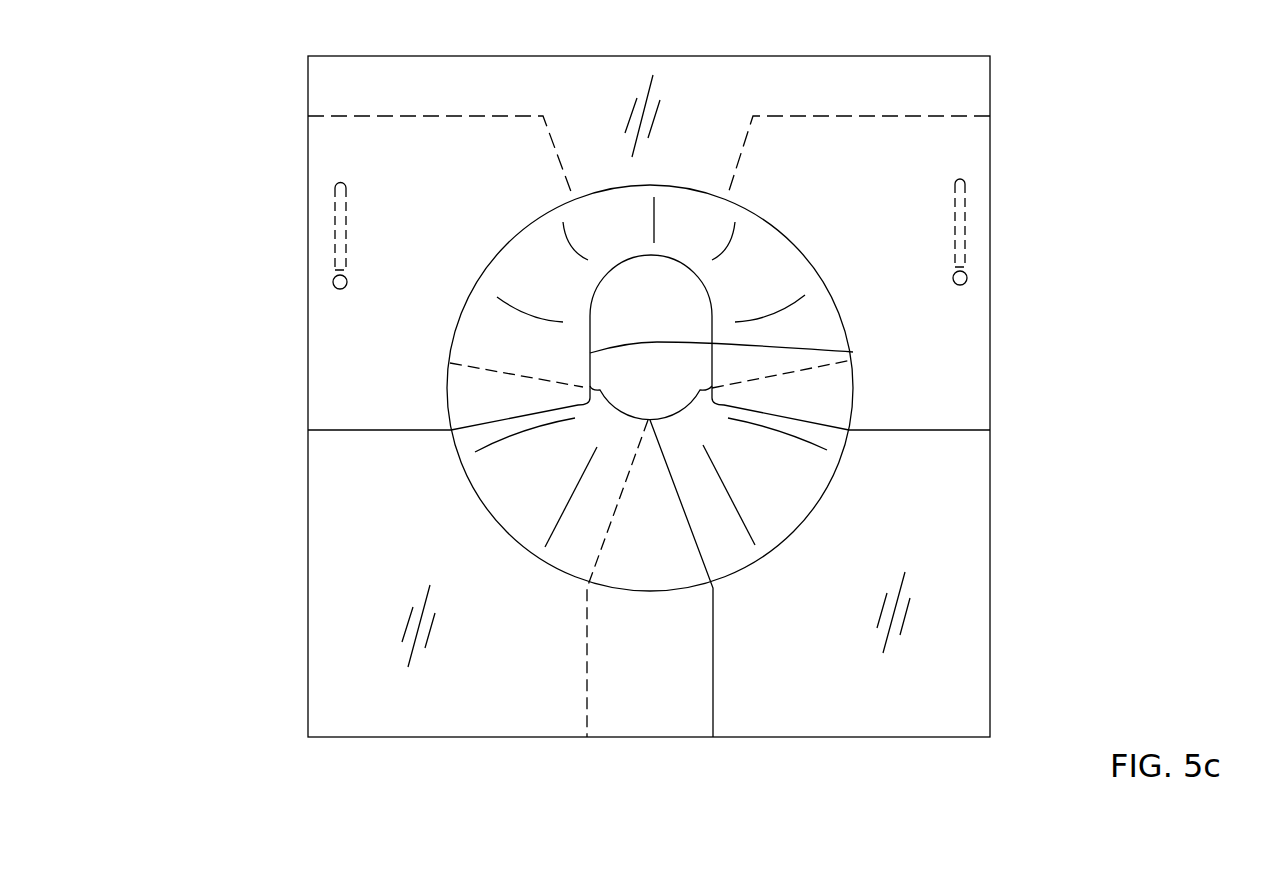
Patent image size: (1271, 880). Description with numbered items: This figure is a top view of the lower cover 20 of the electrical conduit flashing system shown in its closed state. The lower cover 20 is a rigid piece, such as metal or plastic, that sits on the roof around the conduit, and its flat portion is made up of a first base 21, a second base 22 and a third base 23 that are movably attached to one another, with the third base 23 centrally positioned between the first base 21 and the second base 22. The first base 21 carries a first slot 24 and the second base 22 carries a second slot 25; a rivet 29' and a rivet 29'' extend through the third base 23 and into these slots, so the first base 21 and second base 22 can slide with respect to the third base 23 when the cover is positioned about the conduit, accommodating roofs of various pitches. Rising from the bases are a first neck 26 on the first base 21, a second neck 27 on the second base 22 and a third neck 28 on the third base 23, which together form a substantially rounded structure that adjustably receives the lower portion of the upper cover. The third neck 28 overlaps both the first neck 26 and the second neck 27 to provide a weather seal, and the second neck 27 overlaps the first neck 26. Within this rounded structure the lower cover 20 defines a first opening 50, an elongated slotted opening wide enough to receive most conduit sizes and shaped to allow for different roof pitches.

The lower cover 20 is at (230, 99).
The first base 21 is at (972, 672).
The second base 22 is at (337, 668).
The third base 23 is at (958, 75).
The first slot 24 is at (965, 225).
The second slot 25 is at (333, 231).
The first neck 26 is at (822, 480).
The second neck 27 is at (483, 486).
The third neck 28 is at (617, 205).
The rivet 29' is at (1029, 289).
The rivet 29'' is at (268, 297).
The first opening 50 is at (853, 352).